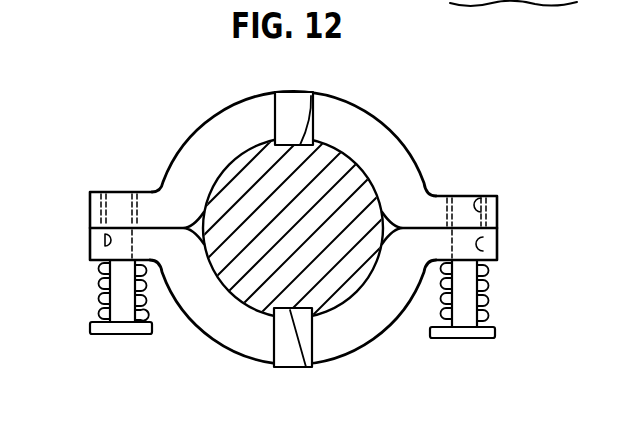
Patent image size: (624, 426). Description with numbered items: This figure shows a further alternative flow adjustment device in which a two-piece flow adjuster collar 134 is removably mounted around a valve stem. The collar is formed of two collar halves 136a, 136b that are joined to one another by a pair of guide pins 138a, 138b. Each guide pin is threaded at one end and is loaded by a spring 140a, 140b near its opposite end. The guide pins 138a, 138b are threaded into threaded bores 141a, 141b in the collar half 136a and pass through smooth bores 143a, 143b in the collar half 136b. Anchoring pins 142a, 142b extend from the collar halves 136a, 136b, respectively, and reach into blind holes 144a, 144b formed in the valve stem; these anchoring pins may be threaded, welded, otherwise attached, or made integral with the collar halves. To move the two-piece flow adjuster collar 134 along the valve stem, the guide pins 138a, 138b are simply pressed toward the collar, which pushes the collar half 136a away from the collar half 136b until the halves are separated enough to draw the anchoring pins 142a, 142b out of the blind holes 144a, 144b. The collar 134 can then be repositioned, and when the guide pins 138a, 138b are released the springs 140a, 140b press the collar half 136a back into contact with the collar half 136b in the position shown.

The two-piece flow adjuster collar 134 is at (297, 236).
The collar half 136a is at (398, 140).
The collar half 136b is at (388, 331).
The guide pin 138a is at (108, 335).
The guide pin 138b is at (472, 339).
The spring 140a is at (92, 288).
The spring 140b is at (495, 283).
The threaded bore 141a is at (106, 208).
The threaded bore 141b is at (481, 198).
The anchoring pin 142a is at (273, 131).
The anchoring pin 142b is at (273, 318).
The smooth bore 143a is at (105, 246).
The smooth bore 143b is at (483, 237).
The blind hole 144a is at (311, 96).
The blind hole 144b is at (306, 367).